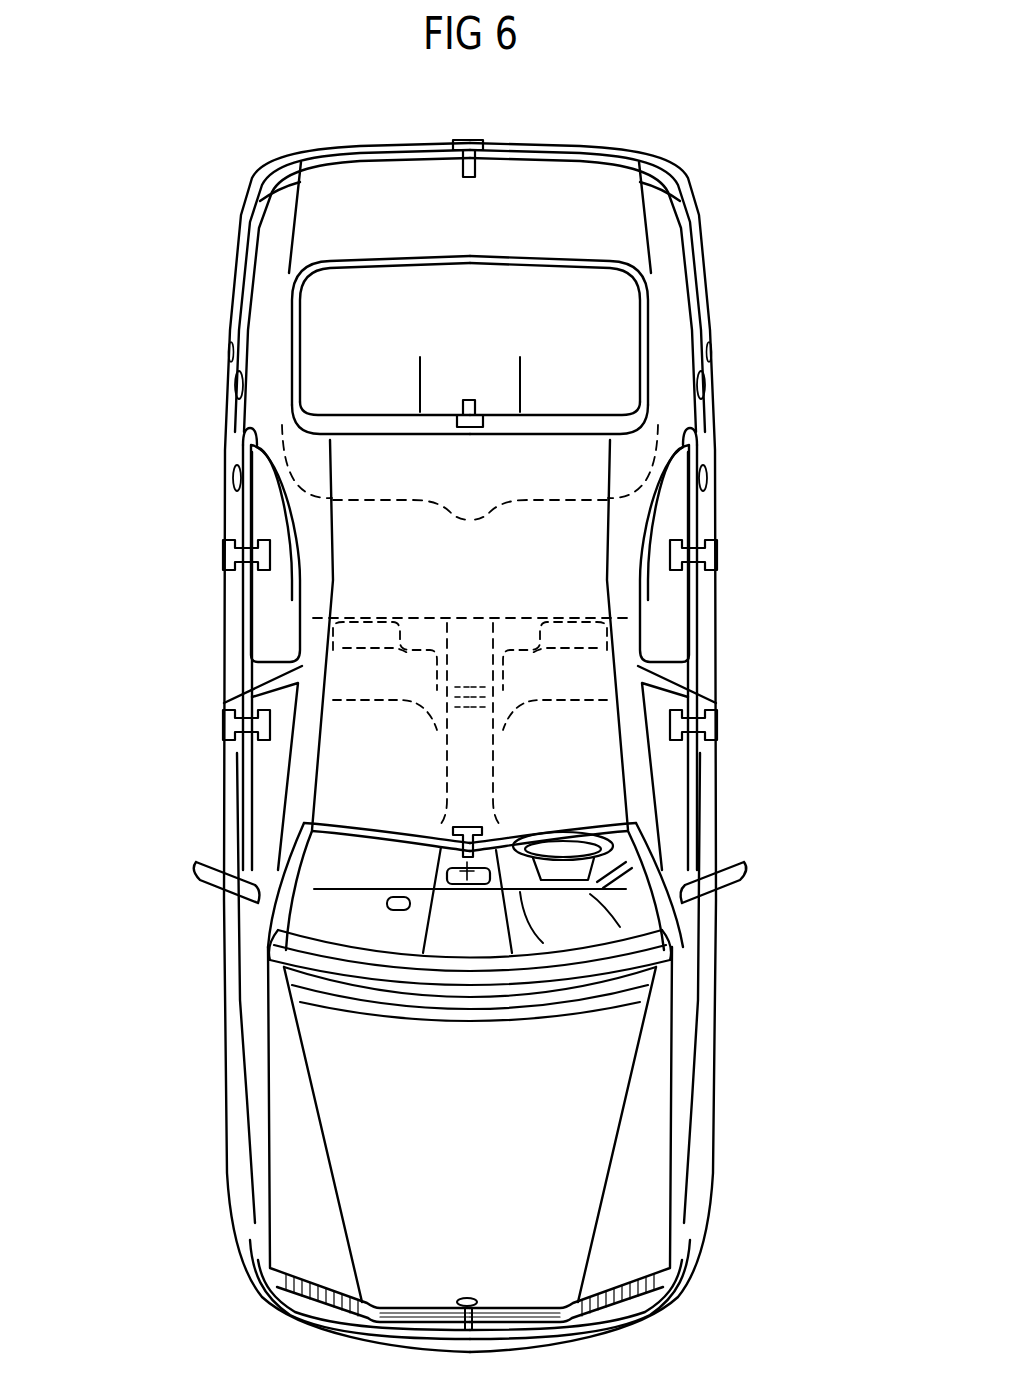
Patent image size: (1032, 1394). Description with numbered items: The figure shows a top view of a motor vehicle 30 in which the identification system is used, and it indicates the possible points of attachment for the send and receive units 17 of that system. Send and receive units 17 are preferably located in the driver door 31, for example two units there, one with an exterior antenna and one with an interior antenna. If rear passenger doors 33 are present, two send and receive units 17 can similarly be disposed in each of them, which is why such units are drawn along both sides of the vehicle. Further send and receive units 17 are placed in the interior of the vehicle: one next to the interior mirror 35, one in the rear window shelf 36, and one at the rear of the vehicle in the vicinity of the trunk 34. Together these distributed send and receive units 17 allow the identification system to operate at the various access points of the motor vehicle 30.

The send and receive unit 17 is at (468, 140).
The motor vehicle 30 is at (711, 148).
The driver door 31 is at (227, 805).
The rear passenger doors 33 is at (227, 627).
The trunk 34 is at (567, 170).
The interior mirror 35 is at (455, 877).
The rear window shelf 36 is at (484, 487).